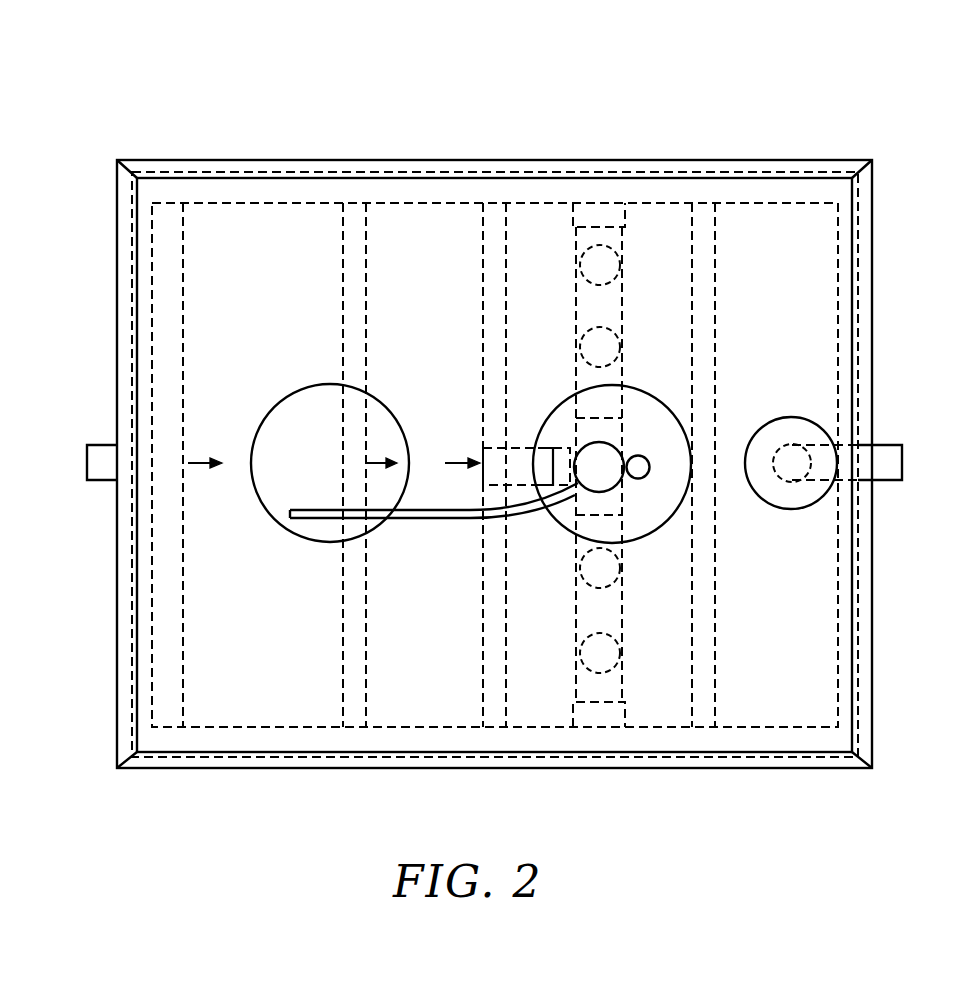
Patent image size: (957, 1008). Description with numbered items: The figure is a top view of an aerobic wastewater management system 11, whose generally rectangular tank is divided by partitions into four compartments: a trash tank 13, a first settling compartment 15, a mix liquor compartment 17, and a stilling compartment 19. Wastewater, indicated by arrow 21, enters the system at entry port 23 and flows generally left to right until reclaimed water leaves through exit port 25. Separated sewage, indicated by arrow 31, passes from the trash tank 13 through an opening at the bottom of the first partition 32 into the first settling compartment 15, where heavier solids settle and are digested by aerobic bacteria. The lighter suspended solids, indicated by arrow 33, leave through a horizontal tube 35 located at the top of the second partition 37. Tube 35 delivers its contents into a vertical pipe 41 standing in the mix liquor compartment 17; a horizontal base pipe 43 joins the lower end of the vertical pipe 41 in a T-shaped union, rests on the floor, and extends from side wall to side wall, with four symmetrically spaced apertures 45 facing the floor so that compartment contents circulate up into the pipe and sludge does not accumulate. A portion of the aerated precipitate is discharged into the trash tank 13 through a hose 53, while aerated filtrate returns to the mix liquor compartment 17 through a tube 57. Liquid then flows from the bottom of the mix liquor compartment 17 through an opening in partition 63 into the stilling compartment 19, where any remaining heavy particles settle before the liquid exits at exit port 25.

The aerobic wastewater management system 11 is at (732, 67).
The trash tank 13 is at (281, 288).
The first settling compartment 15 is at (441, 288).
The mix liquor compartment 17 is at (558, 288).
The stilling compartment 19 is at (796, 288).
The arrow 21 is at (195, 465).
The entry port 23 is at (95, 445).
The exit port 25 is at (890, 445).
The arrow 31 is at (385, 463).
The first partition 32 is at (348, 348).
The arrow 33 is at (448, 463).
The horizontal tube 35 is at (512, 445).
The second partition 37 is at (490, 348).
The vertical pipe 41 is at (610, 456).
The horizontal base pipe 43 is at (608, 290).
The apertures 45 is at (612, 330).
The hose 53 is at (316, 522).
The tube 57 is at (640, 478).
The partition 63 is at (716, 352).